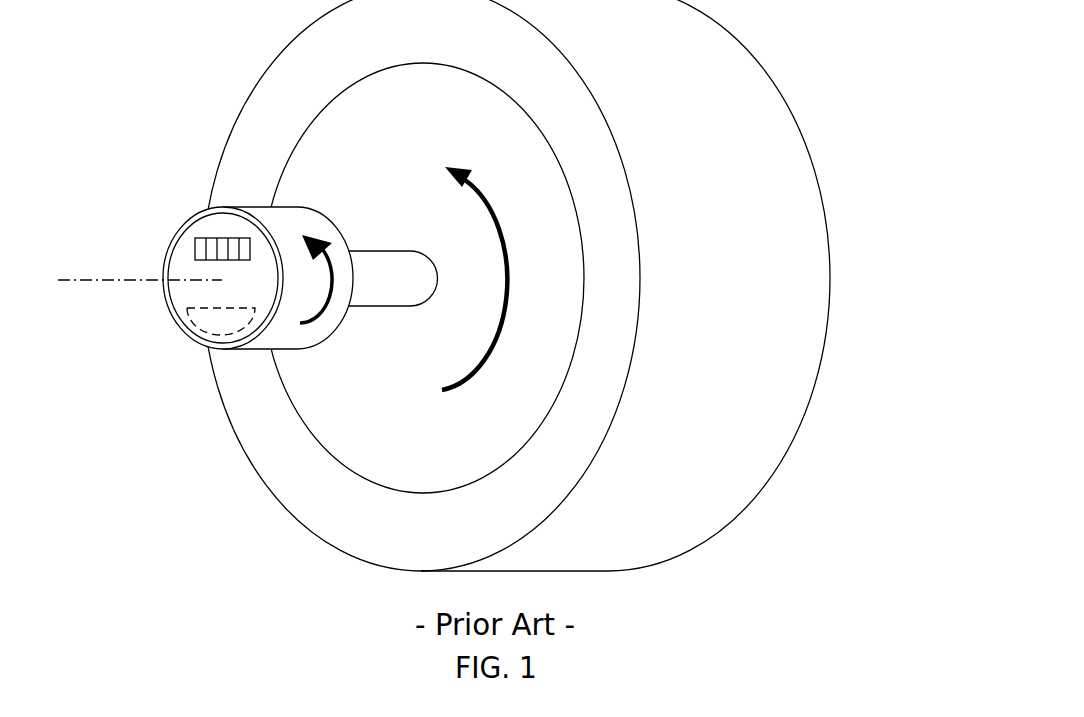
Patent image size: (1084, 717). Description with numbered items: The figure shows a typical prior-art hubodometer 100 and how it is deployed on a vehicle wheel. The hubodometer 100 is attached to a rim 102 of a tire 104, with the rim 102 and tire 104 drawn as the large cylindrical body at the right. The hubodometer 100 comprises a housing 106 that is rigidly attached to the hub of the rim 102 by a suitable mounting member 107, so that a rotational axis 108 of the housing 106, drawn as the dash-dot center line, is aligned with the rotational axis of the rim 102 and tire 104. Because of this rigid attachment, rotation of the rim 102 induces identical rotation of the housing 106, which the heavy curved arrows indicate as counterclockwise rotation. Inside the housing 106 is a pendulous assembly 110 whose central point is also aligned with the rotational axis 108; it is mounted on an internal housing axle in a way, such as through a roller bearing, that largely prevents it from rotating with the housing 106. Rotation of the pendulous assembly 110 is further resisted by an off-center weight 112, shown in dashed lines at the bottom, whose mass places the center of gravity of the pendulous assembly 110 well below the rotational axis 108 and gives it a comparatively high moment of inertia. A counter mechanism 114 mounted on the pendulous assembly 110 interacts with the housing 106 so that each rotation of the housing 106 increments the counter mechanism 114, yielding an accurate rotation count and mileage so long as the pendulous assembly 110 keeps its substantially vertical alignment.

The hubodometer 100 is at (461, 293).
The rim 102 is at (372, 450).
The tire 104 is at (763, 157).
The housing 106 is at (278, 220).
The mounting member 107 is at (403, 272).
The rotational axis 108 is at (104, 278).
The pendulous assembly 110 is at (185, 295).
The off-center weight 112 is at (222, 322).
The counter mechanism 114 is at (197, 253).